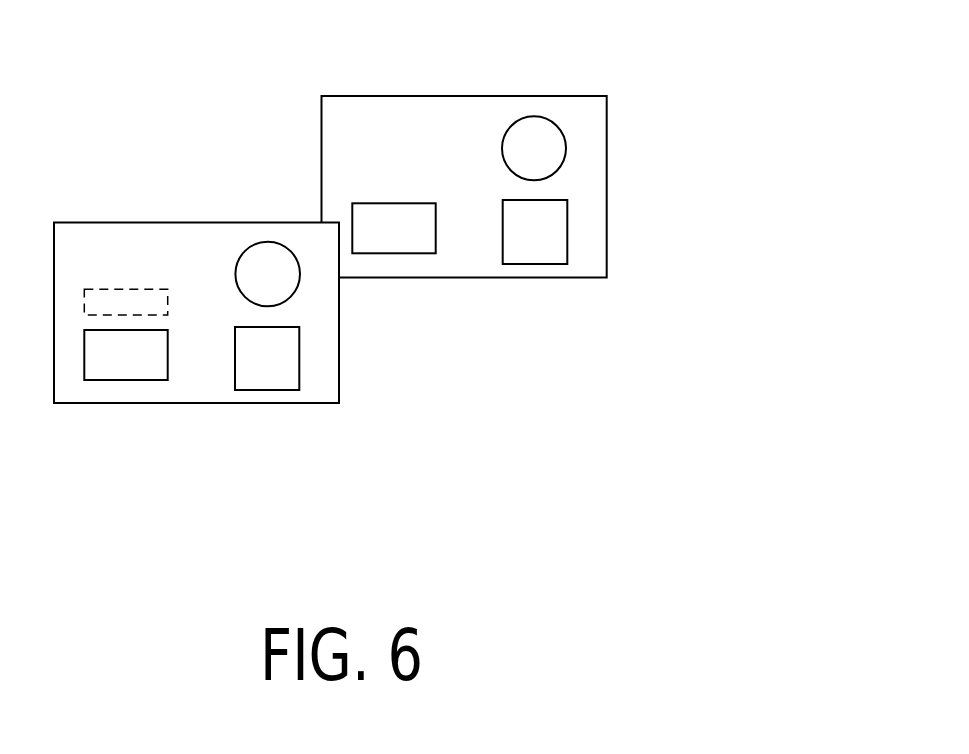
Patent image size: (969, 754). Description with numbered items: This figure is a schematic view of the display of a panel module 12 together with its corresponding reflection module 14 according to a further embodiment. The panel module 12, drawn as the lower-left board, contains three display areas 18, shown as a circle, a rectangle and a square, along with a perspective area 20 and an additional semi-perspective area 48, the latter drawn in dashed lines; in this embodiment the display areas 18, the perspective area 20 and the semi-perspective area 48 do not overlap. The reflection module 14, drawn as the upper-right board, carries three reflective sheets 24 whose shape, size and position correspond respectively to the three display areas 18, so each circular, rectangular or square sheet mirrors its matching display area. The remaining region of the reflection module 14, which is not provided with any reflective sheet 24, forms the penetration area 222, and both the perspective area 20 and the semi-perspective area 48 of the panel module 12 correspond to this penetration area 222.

The panel module 12 is at (202, 404).
The reflection module 14 is at (523, 279).
The display area 18 is at (265, 258).
The perspective area 20 is at (197, 237).
The penetration area 222 is at (407, 120).
The reflective sheet 24 is at (533, 130).
The semi-perspective area 48 is at (125, 300).